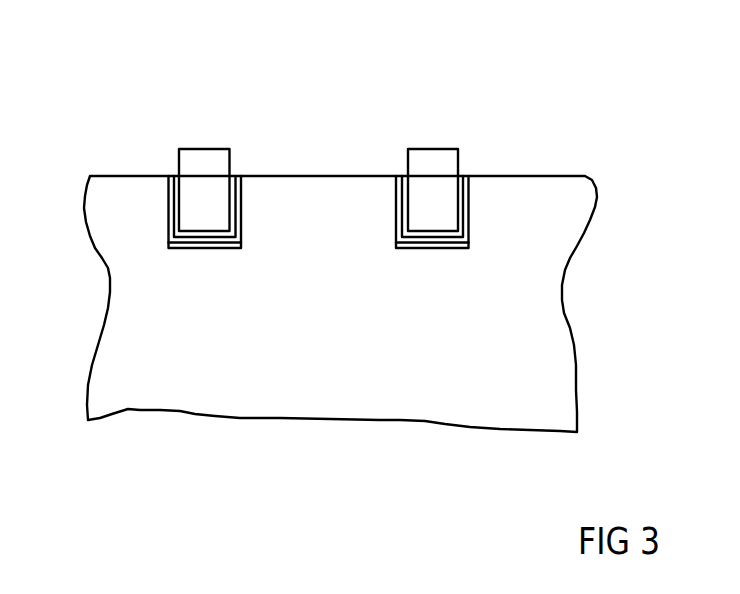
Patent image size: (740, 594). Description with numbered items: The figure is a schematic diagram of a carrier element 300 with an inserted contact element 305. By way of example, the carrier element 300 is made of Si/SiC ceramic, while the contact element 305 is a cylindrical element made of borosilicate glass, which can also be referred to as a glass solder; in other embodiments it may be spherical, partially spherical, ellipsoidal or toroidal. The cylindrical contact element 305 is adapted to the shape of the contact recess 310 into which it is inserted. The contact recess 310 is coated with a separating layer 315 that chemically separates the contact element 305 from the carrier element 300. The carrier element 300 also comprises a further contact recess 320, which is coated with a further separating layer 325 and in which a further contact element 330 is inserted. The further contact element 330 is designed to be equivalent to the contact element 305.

The carrier element 300 is at (363, 344).
The contact element 305 is at (431, 132).
The contact recess 310 is at (441, 249).
The separating layer 315 is at (424, 331).
The further contact recess 320 is at (170, 249).
The further separating layer 325 is at (205, 331).
The further contact element 330 is at (205, 132).